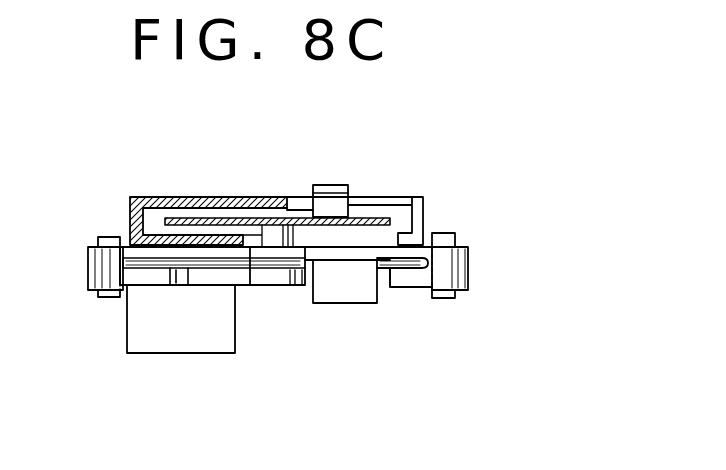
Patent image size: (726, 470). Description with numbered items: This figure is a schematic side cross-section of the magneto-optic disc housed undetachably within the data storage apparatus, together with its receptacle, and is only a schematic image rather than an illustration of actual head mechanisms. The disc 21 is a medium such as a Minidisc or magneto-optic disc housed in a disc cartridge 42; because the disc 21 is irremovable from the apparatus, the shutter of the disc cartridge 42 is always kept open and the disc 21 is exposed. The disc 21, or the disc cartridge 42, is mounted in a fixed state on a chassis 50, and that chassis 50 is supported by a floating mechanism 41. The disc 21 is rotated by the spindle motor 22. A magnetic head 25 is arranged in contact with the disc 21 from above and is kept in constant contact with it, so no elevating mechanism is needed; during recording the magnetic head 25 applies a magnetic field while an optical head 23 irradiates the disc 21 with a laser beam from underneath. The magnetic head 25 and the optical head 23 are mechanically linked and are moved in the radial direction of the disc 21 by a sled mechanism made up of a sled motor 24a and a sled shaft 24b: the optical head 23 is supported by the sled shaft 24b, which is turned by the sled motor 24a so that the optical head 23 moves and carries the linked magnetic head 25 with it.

The disc 21 is at (232, 221).
The spindle motor 22 is at (273, 282).
The optical head 23 is at (364, 303).
The sled motor 24a is at (152, 355).
The sled shaft 24b is at (243, 287).
The magnetic head 25 is at (337, 202).
The floating mechanism 41 is at (112, 298).
The disc cartridge 42 is at (163, 197).
The chassis 50 is at (87, 262).